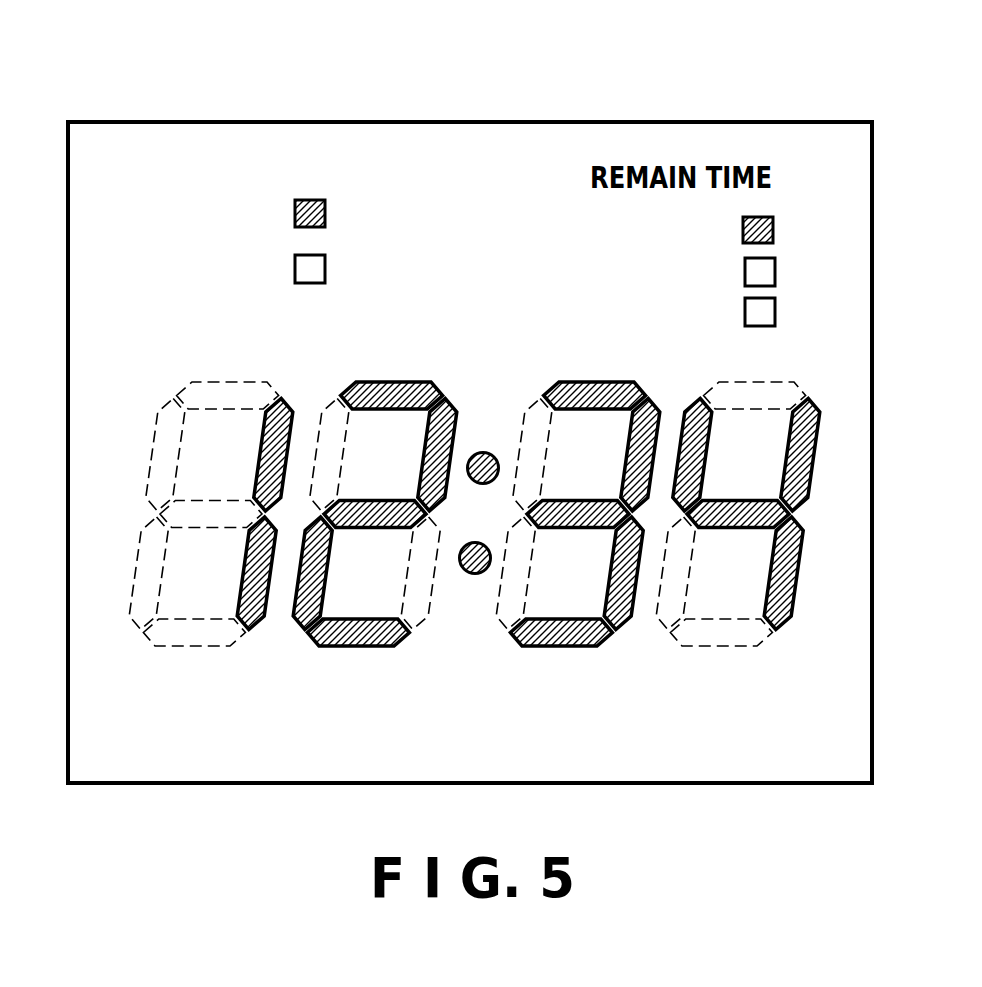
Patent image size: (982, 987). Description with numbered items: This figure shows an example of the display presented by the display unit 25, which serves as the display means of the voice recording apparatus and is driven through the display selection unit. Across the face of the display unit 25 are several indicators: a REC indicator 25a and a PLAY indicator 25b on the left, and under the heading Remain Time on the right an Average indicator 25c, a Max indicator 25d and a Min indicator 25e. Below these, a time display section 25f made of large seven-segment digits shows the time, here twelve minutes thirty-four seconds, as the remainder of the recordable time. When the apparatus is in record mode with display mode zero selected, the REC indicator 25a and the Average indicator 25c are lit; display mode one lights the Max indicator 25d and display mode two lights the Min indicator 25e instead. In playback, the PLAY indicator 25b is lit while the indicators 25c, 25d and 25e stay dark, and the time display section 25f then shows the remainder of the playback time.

The display unit 25 is at (483, 121).
The REC indicator 25a is at (325, 210).
The PLAY indicator 25b is at (325, 270).
The Average indicator 25c is at (773, 226).
The Max indicator 25d is at (775, 272).
The Min indicator 25e is at (775, 312).
The time display section 25f is at (822, 670).